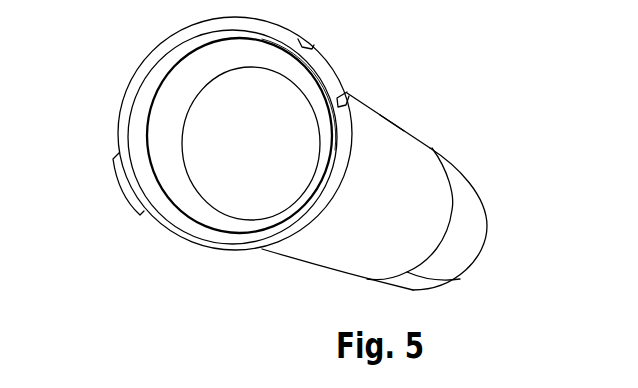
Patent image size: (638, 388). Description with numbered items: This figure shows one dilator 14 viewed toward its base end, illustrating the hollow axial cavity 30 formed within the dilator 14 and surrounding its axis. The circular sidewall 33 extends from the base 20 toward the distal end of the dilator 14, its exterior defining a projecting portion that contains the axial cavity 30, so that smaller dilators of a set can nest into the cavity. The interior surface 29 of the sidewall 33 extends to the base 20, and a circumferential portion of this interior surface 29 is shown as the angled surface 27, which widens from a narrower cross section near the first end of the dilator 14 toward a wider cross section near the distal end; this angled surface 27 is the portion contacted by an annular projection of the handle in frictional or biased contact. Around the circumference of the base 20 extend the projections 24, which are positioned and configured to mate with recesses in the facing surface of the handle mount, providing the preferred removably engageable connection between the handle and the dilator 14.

The dilator 14 is at (434, 140).
The base 20 is at (270, 247).
The projections 24 is at (345, 70).
The angled surface 27 is at (184, 83).
The interior surface 29 is at (258, 104).
The hollow axial cavity 30 is at (247, 145).
The sidewall 33 is at (378, 128).